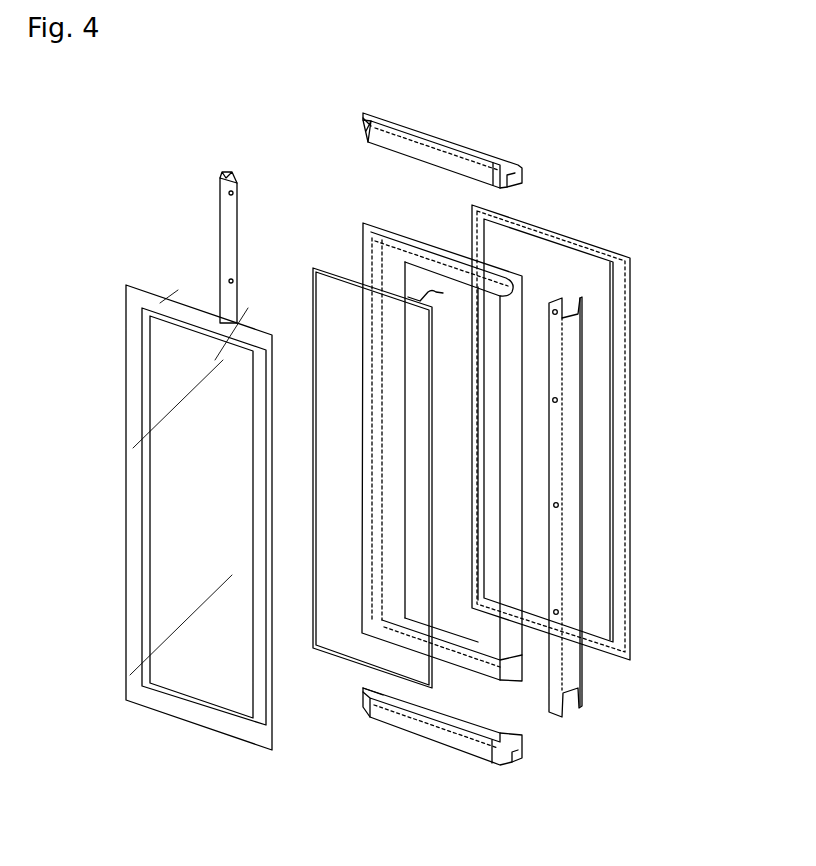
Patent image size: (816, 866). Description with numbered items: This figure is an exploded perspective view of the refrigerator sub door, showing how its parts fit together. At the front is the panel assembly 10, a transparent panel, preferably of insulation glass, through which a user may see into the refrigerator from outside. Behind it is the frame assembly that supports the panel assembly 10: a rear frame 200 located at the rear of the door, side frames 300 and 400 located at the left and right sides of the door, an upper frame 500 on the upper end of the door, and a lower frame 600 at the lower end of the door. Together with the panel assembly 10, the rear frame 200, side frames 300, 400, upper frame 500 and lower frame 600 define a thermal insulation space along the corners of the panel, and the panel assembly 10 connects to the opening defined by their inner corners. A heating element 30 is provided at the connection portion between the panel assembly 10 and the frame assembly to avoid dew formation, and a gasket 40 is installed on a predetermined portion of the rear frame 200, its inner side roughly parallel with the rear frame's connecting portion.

The panel assembly 10 is at (180, 297).
The heating element 30 is at (327, 657).
The gasket 40 is at (630, 382).
The rear frame 200 is at (512, 262).
The side frame 300 is at (213, 183).
The side frame 400 is at (583, 675).
The upper frame 500 is at (427, 130).
The lower frame 600 is at (435, 742).